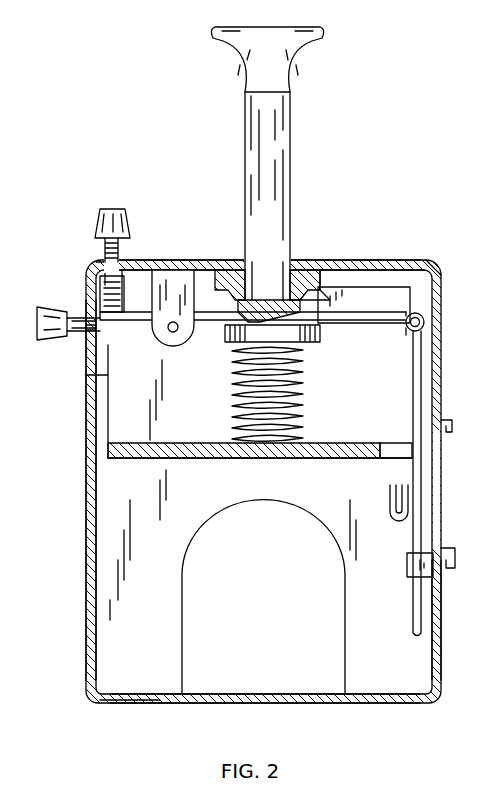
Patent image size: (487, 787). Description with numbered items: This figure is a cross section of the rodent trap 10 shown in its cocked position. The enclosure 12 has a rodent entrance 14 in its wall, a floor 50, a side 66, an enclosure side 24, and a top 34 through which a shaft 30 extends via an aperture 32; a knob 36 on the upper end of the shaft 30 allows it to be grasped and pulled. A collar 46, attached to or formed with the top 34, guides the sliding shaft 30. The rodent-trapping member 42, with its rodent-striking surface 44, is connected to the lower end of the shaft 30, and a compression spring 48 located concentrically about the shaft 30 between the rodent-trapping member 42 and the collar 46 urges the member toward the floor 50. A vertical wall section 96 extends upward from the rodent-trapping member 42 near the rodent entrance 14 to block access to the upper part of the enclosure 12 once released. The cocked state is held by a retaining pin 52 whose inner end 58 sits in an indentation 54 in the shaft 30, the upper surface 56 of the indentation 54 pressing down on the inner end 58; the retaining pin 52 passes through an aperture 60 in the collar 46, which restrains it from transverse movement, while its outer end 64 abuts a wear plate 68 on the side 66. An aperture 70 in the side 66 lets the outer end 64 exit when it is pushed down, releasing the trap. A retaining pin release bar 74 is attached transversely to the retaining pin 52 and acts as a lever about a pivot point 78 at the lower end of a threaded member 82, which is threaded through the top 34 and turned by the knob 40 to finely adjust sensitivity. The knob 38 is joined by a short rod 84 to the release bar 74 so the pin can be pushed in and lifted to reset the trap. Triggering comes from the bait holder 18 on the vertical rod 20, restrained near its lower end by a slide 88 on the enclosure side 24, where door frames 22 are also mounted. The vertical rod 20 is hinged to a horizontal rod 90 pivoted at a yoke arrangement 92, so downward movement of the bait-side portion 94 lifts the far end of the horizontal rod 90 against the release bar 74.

The rodent trap 10 is at (433, 228).
The enclosure 12 is at (100, 492).
The rodent entrance 14 is at (195, 714).
The bait holder 18 is at (410, 512).
The vertical rod 20 is at (420, 475).
The door frames 22 is at (452, 426).
The enclosure side 24 is at (445, 629).
The shaft 30 is at (252, 166).
The aperture 32 is at (297, 262).
The top 34 is at (372, 261).
The knob 36 is at (290, 75).
The knob 38 is at (48, 308).
The knob 40 is at (113, 222).
The rodent-trapping member 42 is at (178, 445).
The rodent-striking surface 44 is at (190, 460).
The collar 46 is at (320, 262).
The compression spring 48 is at (303, 400).
The floor 50 is at (389, 704).
The retaining pin 52 is at (224, 330).
The indentation 54 is at (290, 322).
The upper surface 56 is at (258, 280).
The inner end 58 is at (236, 262).
The aperture 60 is at (197, 272).
The outer end 64 is at (110, 322).
The side 66 is at (88, 448).
The wear plate 68 is at (76, 268).
The aperture 70 is at (86, 332).
The retaining pin release bar 74 is at (130, 322).
The pivot point 78 is at (128, 274).
The threaded member 82 is at (103, 250).
The short rod 84 is at (78, 316).
The slide 88 is at (410, 572).
The horizontal rod 90 is at (396, 322).
The yoke arrangement 92 is at (178, 276).
The bait-side portion 94 is at (392, 322).
The vertical wall section 96 is at (421, 302).